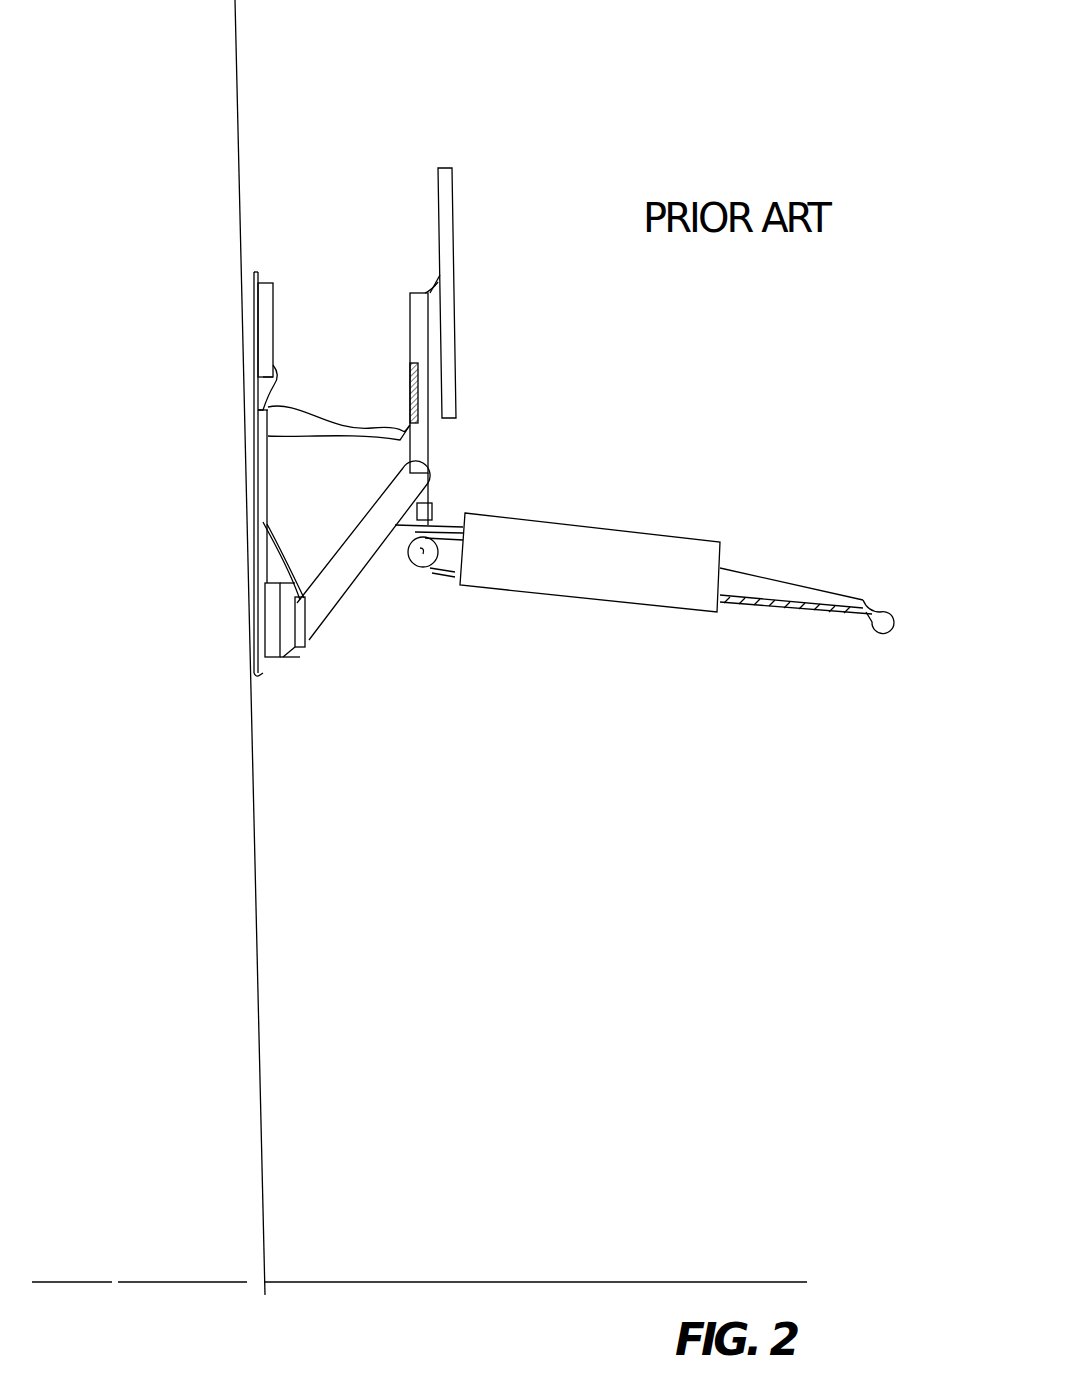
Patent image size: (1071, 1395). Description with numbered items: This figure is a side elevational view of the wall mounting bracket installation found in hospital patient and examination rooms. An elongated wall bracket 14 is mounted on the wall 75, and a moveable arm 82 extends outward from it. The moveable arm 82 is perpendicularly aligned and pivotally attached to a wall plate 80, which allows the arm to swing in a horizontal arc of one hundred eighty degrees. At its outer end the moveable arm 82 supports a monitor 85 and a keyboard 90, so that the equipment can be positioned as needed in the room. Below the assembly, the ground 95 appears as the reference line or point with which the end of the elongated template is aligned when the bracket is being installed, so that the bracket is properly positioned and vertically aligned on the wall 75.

The elongated wall bracket 14 is at (243, 438).
The wall 75 is at (243, 68).
The wall plate 80 is at (285, 655).
The moveable arm 82 is at (345, 585).
The monitor 85 is at (455, 176).
The keyboard 90 is at (863, 592).
The ground 95 is at (672, 1282).